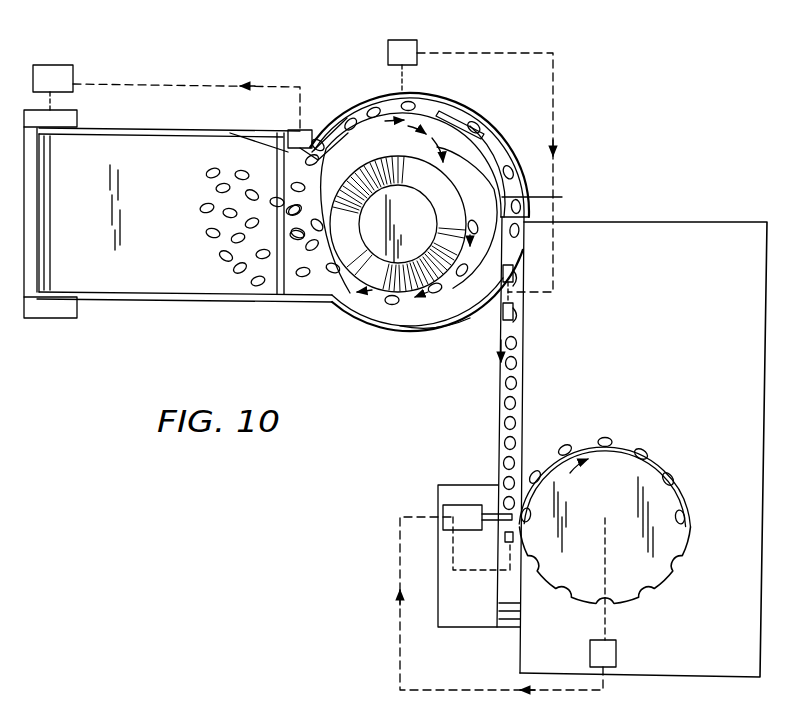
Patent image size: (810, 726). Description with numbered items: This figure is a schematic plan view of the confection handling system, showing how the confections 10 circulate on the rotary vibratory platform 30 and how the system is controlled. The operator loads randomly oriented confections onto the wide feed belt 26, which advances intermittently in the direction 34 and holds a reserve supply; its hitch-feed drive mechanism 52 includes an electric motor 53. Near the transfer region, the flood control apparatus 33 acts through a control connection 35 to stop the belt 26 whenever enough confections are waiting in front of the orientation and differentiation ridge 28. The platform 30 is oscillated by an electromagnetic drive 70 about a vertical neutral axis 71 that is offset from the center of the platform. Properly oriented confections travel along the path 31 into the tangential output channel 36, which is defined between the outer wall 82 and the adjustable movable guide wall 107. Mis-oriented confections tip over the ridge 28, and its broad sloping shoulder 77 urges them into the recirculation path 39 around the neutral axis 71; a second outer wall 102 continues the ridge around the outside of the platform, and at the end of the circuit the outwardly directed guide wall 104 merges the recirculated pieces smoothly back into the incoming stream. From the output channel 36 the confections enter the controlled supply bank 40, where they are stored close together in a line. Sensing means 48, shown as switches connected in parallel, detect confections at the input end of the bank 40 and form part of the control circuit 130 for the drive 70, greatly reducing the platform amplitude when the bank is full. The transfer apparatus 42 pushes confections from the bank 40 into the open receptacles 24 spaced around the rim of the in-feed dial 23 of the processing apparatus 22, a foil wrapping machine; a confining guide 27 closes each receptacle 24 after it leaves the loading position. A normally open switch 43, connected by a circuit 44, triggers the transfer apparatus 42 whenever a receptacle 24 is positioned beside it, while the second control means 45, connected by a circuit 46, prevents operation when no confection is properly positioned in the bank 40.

The confections 10 is at (217, 253).
The processing apparatus 22 is at (740, 221).
The in-feed dial 23 is at (618, 447).
The receptacles 24 is at (673, 560).
The feed belt 26 is at (150, 282).
The confining guide 27 is at (547, 456).
The orientation and differentiation ridge 28 is at (347, 129).
The rotary vibratory platform 30 is at (351, 323).
The path 31 is at (336, 131).
The flood control apparatus 33 is at (297, 129).
The direction of belt movement 34 is at (190, 220).
The control connection 35 is at (177, 84).
The output channel 36 is at (468, 121).
The recirculation path 39 is at (425, 128).
The controlled supply bank 40 is at (538, 358).
The transfer apparatus 42 is at (432, 496).
The first transfer control means 43 is at (610, 662).
The circuit 44 is at (472, 692).
The second control means 45 is at (504, 539).
The circuit 46 is at (484, 572).
The sensing means 48 is at (505, 312).
The drive mechanism 52 is at (58, 61).
The electric motor 53 is at (74, 70).
The electromagnetic drive 70 is at (412, 41).
The vertical neutral axis 71 is at (412, 203).
The sloping shoulder 77 is at (456, 167).
The outer wall 82 is at (498, 140).
The second outer wall 102 is at (438, 325).
The guide wall 104 is at (340, 226).
The movable guide wall 107 is at (548, 200).
The control circuit 130 is at (492, 53).